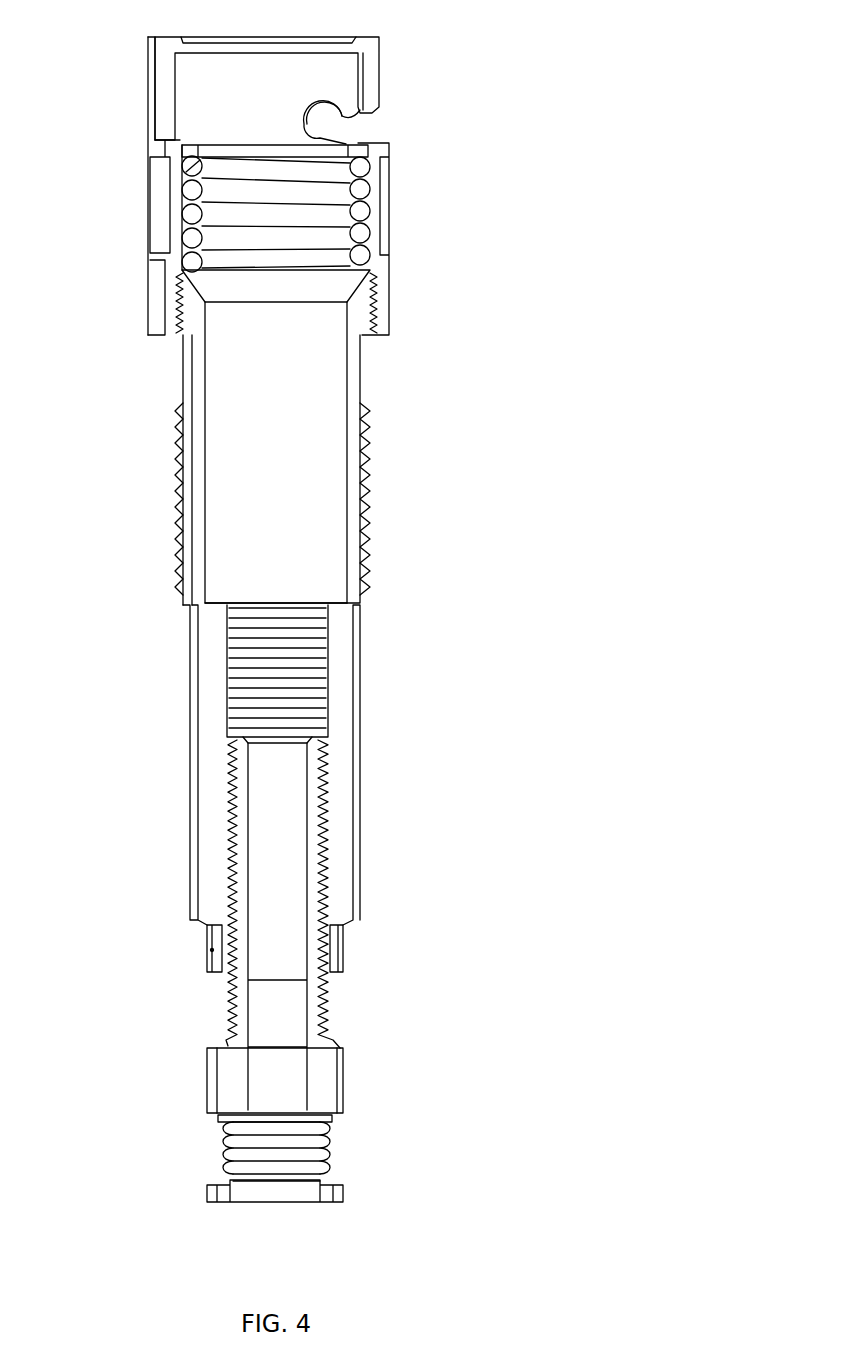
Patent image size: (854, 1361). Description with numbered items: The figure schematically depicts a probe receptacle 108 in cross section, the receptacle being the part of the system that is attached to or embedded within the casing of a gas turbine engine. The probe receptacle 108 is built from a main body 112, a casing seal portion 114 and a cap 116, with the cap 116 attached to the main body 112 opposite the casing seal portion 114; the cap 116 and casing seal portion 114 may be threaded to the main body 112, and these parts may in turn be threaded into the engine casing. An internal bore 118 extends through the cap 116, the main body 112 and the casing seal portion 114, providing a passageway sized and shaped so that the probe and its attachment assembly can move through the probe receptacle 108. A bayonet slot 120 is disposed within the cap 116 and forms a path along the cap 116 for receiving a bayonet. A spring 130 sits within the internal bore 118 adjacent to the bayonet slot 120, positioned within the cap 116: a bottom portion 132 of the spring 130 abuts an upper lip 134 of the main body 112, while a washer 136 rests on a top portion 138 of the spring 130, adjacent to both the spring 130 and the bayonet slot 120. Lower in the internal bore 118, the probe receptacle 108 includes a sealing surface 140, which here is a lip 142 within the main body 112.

The probe receptacle 108 is at (446, 22).
The main body 112 is at (190, 768).
The casing seal portion 114 is at (208, 1083).
The cap 116 is at (148, 55).
The internal bore 118 is at (218, 485).
The bayonet slot 120 is at (391, 119).
The spring 130 is at (360, 233).
The bottom portion of the spring 132 is at (232, 272).
The upper lip of the main body 134 is at (183, 270).
The washer 136 is at (267, 145).
The top portion of the spring 138 is at (225, 160).
The sealing surface 140 is at (327, 603).
The lip 142 is at (217, 603).